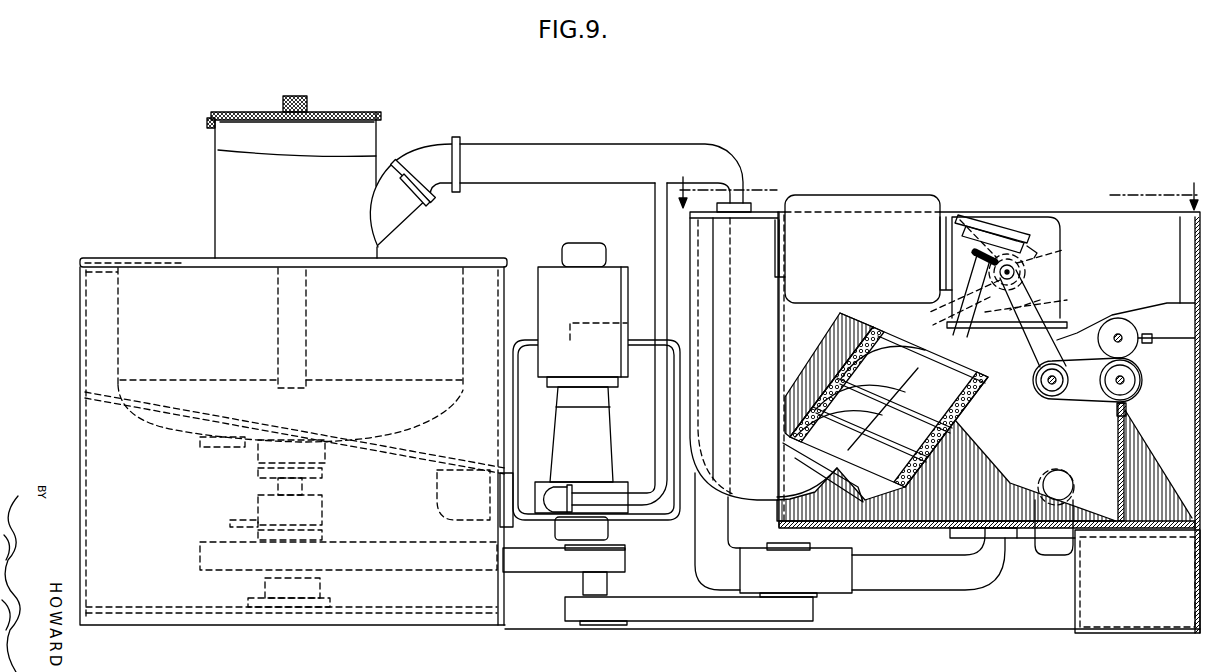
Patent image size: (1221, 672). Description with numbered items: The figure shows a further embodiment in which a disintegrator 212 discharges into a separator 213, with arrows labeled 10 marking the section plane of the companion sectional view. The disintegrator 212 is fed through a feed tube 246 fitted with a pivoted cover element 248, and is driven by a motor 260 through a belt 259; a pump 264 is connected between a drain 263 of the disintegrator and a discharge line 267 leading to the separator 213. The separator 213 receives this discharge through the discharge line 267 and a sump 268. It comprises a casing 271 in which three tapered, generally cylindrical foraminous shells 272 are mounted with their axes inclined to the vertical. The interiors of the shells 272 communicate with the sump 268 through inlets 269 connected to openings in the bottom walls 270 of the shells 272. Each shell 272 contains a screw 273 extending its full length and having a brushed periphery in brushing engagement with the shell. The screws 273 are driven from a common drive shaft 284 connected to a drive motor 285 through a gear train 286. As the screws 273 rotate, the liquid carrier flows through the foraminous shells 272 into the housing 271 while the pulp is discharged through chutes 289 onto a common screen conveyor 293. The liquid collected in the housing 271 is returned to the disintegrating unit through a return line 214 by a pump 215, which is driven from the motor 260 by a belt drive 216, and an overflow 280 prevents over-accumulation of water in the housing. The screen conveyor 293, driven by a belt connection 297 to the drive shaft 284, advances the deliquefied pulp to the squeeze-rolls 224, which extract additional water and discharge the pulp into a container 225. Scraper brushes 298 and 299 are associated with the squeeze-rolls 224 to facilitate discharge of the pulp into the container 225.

The section line 10- 10 is at (937, 200).
The disintegrator 212 is at (76, 303).
The separator 213 is at (771, 204).
The return line 214 is at (973, 578).
The pump 215 is at (822, 582).
The belt drive 216 is at (657, 606).
The squeeze-roll extractor 224 is at (1124, 328).
The container 225 is at (1163, 594).
The feed tube 246 is at (220, 193).
The pivoted cover element 248 is at (343, 112).
The belt 259 is at (550, 557).
The motor 260 is at (654, 424).
The drain 263 is at (440, 476).
The pump 264 is at (603, 300).
The discharge line 267 is at (734, 166).
The sump 268 is at (770, 440).
The inlets 269 is at (816, 523).
The bottom walls 270 is at (892, 523).
The casing 271 is at (1034, 503).
The foraminous shells 272 is at (965, 432).
The screws 273 is at (980, 407).
The overflow 280 is at (1064, 480).
The drive shaft 284 is at (1032, 265).
The drive motor 285 is at (886, 258).
The gear train 286 is at (1032, 226).
The chutes 289 is at (1040, 302).
The screen conveyor 293 is at (1090, 401).
The belt connection 297 is at (1025, 280).
The scraper brush 298 is at (1150, 345).
The scraper brush 299 is at (1128, 410).